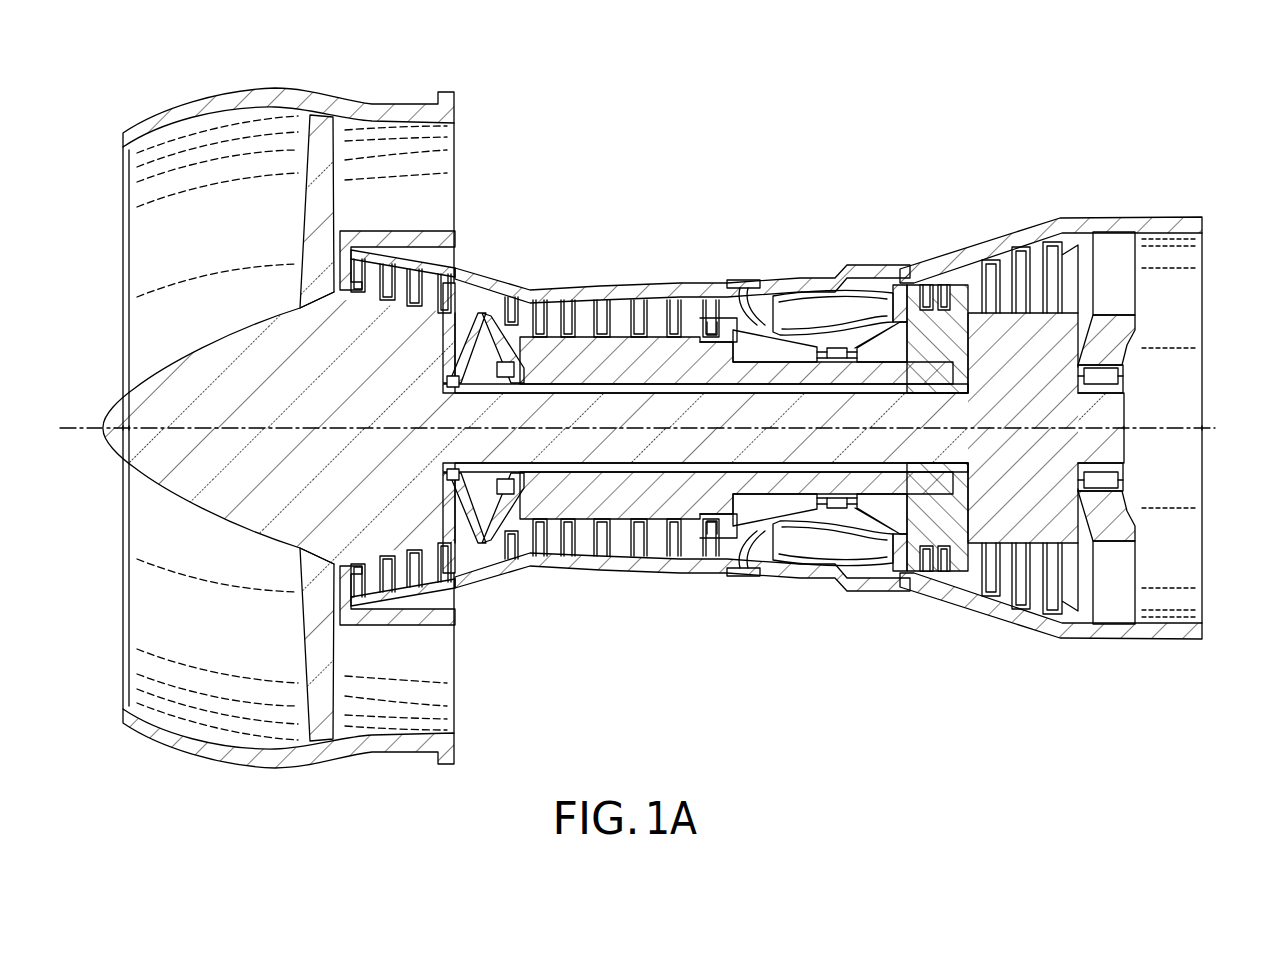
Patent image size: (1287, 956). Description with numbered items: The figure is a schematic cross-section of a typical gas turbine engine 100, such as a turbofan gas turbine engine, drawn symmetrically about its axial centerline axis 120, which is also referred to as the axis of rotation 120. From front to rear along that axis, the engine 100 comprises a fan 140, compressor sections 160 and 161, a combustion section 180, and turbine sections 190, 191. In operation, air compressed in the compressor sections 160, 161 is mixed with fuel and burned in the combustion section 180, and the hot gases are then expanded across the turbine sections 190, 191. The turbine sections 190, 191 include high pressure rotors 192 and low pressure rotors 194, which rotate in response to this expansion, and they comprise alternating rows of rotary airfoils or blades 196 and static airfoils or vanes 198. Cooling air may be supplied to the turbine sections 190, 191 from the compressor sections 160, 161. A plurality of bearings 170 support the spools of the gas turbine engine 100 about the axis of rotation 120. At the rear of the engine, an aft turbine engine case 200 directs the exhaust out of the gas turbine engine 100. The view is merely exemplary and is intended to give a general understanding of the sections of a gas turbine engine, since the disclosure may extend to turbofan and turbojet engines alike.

The gas turbine engine 100 is at (920, 140).
The axial centerline axis 120 is at (84, 414).
The fan 140 is at (336, 166).
The compressor section 160 is at (356, 776).
The compressor section 161 is at (536, 582).
The bearings 170 is at (1123, 372).
The combustion section 180 is at (757, 600).
The turbine section 190 is at (897, 652).
The turbine section 191 is at (971, 652).
The high pressure rotors 192 is at (942, 306).
The low pressure rotors 194 is at (1063, 333).
The rotary airfoils or blades 196 is at (1004, 254).
The static airfoils or vanes 198 is at (1020, 257).
The aft turbine engine case 200 is at (1120, 217).